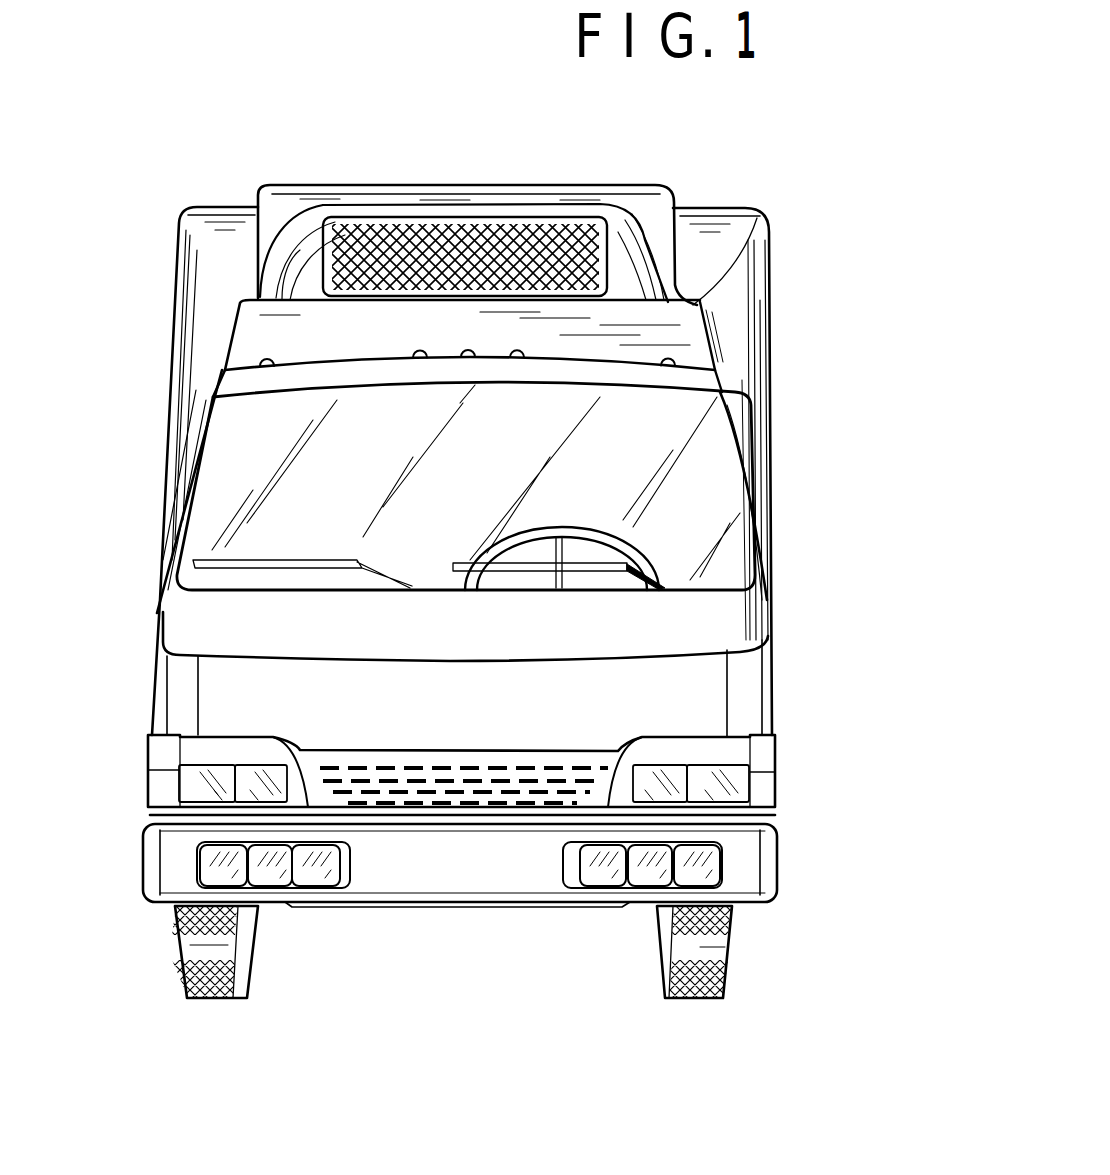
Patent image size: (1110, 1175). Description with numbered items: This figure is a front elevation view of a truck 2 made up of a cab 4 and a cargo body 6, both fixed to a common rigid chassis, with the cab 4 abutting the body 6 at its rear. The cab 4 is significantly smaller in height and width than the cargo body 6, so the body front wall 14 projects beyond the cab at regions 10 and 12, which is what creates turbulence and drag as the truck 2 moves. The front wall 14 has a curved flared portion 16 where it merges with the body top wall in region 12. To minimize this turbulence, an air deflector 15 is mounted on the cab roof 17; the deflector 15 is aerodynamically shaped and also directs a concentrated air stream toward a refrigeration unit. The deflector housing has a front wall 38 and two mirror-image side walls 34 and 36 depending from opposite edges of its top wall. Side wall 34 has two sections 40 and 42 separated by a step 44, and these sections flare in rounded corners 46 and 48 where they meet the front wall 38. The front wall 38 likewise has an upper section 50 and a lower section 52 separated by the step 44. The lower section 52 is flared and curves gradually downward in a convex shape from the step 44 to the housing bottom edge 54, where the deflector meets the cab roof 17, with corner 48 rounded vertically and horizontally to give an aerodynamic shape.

The truck 2 is at (830, 470).
The cab 4 is at (733, 687).
The cargo body 6 is at (768, 247).
The region 10 is at (743, 383).
The region 12 is at (690, 270).
The front wall 14 is at (747, 320).
The air deflector 15 is at (512, 148).
The curved flared portion 16 is at (215, 218).
The cab roof 17 is at (295, 353).
The side wall 34 is at (224, 260).
The side wall 36 is at (697, 303).
The front wall 38 is at (496, 338).
The section 40 is at (293, 237).
The section 42 is at (213, 352).
The step 44 is at (233, 323).
The rounded corner 46 is at (340, 222).
The rounded corner 48 is at (213, 380).
The upper section 50 is at (443, 195).
The lower section 52 is at (660, 340).
The housing bottom edge 54 is at (193, 410).